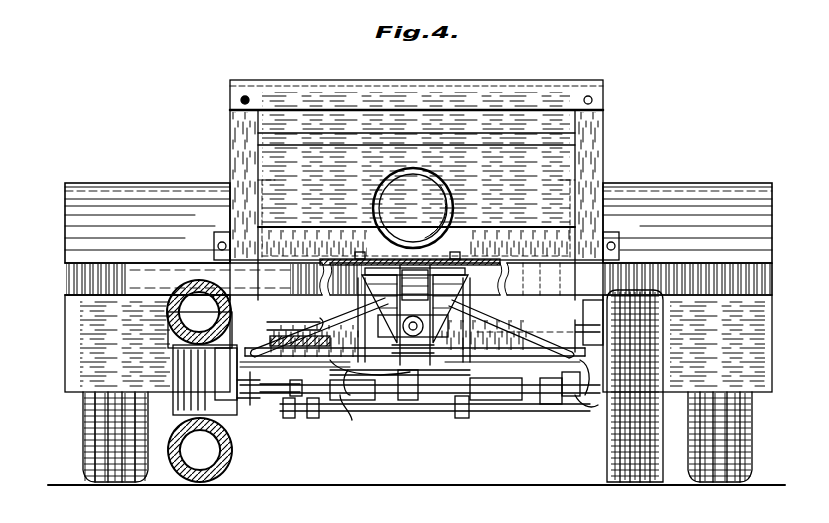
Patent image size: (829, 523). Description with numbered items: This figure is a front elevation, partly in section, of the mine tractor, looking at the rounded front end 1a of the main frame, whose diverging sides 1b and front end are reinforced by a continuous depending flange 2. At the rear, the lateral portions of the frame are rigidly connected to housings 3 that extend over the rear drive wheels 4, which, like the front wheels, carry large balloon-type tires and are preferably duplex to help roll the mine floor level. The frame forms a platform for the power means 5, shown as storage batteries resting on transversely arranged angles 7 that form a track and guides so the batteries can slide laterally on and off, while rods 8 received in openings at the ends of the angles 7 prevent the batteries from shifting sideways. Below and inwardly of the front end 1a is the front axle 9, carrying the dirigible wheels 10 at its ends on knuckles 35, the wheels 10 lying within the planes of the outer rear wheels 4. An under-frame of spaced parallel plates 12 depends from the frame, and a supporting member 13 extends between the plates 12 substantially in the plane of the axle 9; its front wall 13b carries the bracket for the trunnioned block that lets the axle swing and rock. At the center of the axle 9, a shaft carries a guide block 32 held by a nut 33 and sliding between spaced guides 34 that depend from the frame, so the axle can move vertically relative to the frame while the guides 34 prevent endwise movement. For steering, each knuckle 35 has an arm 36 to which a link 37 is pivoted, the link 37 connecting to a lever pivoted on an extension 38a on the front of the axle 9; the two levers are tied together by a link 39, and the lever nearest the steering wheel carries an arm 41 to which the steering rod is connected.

The front end 1a is at (314, 258).
The sides 1b is at (65, 277).
The depending flange 2 is at (80, 296).
The housings 3 is at (160, 183).
The rear drive wheels 4 is at (115, 485).
The power means 5 is at (565, 160).
The angles 7 is at (518, 240).
The rods 8 is at (214, 242).
The axle 9 is at (510, 334).
The dirigible wheels 10 is at (232, 462).
The plates 12 is at (262, 305).
The supporting member 13 is at (268, 336).
The front wall 13b is at (566, 345).
The guide block 32 is at (436, 388).
The nut 33 is at (470, 315).
The guides 34 is at (368, 288).
The knuckles 35 is at (242, 414).
The arm 36 is at (575, 398).
The link 37 is at (308, 405).
The extension 38a is at (485, 398).
The link 39 is at (408, 400).
The arm 41 is at (375, 400).